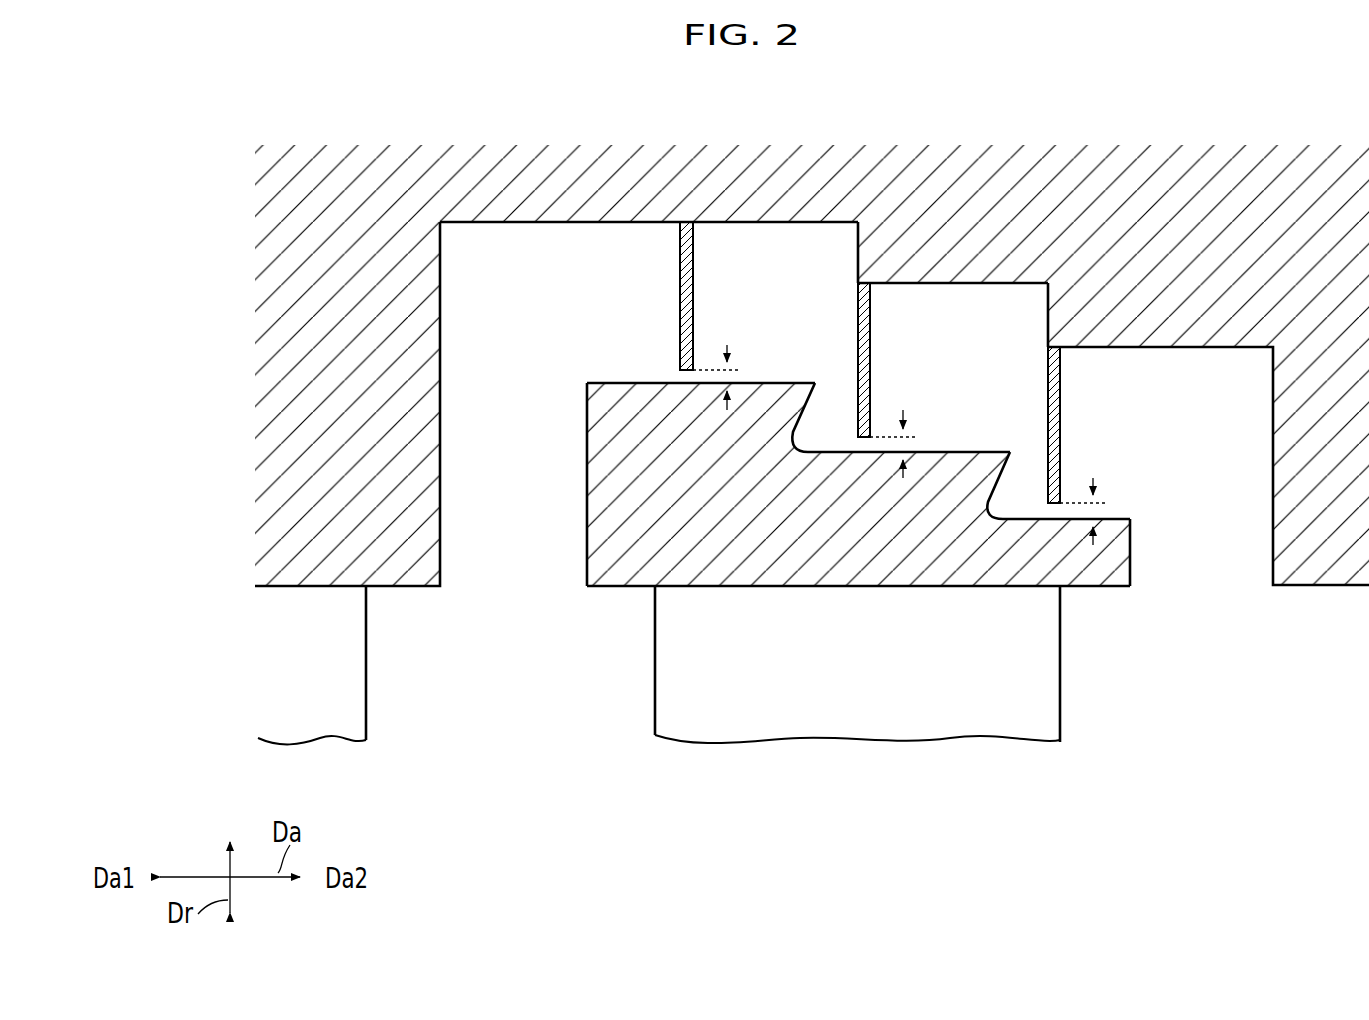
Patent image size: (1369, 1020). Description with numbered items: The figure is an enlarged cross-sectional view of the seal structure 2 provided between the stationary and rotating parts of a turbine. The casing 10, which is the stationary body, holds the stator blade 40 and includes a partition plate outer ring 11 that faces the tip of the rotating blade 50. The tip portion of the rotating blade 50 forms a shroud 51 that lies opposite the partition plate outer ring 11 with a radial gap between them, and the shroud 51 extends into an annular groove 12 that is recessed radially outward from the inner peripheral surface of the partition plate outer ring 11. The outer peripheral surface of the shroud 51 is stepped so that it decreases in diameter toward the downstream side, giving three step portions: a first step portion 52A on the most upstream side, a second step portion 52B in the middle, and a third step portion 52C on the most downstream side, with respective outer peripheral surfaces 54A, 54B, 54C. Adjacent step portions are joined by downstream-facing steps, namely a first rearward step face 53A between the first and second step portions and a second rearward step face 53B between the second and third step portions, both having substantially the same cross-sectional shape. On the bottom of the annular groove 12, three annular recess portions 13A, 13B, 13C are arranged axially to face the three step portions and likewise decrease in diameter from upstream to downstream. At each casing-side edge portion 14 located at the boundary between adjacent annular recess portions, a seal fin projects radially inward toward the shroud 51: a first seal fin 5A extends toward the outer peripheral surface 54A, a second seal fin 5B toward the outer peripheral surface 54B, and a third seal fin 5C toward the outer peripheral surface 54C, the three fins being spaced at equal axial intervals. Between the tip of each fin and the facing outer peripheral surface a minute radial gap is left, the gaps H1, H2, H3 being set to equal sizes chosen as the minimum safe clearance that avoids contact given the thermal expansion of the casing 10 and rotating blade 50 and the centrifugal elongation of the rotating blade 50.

The seal structure 2 is at (472, 368).
The casing 10 is at (761, 368).
The partition plate outer ring 11 is at (297, 540).
The annular groove 12 is at (502, 584).
The first annular recess portion 13A is at (562, 226).
The second annular recess portion 13B is at (928, 286).
The third annular recess portion 13C is at (1197, 352).
The casing-side edge portion 14 is at (857, 284).
The first seal fin 5A is at (693, 268).
The second seal fin 5B is at (870, 352).
The third seal fin 5C is at (1062, 400).
The minute gap H1 is at (733, 372).
The minute gap H2 is at (908, 440).
The minute gap H3 is at (1105, 505).
The stator blade 40 is at (277, 682).
The rotating blade 50 is at (780, 723).
The shroud 51 is at (901, 516).
The first step portion 52A is at (707, 410).
The second step portion 52B is at (925, 465).
The third step portion 52C is at (1071, 533).
The first rearward step face 53A is at (800, 418).
The second rearward step face 53B is at (1003, 465).
The outer peripheral surface of first step portion 54A is at (622, 385).
The outer peripheral surface of second step portion 54B is at (970, 452).
The outer peripheral surface of third step portion 54C is at (1112, 518).